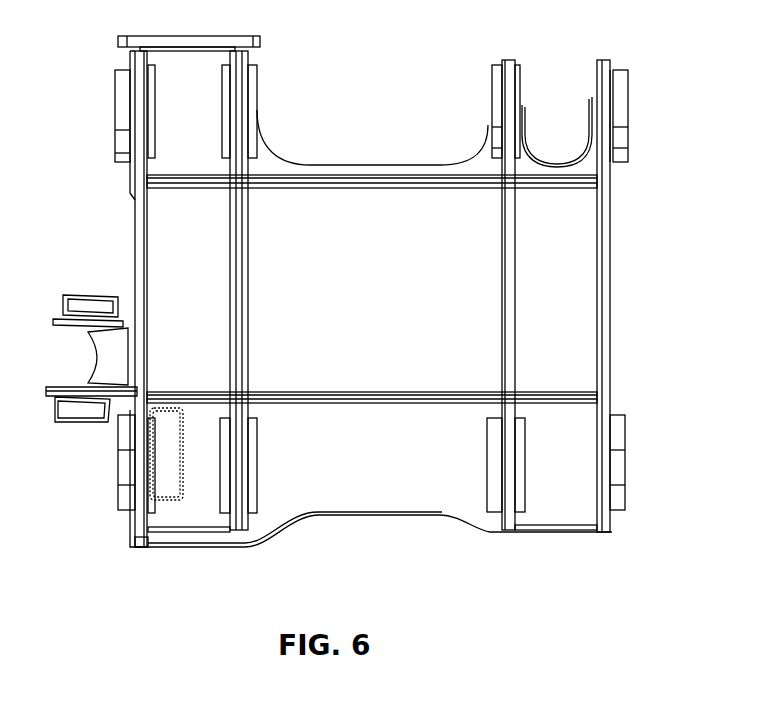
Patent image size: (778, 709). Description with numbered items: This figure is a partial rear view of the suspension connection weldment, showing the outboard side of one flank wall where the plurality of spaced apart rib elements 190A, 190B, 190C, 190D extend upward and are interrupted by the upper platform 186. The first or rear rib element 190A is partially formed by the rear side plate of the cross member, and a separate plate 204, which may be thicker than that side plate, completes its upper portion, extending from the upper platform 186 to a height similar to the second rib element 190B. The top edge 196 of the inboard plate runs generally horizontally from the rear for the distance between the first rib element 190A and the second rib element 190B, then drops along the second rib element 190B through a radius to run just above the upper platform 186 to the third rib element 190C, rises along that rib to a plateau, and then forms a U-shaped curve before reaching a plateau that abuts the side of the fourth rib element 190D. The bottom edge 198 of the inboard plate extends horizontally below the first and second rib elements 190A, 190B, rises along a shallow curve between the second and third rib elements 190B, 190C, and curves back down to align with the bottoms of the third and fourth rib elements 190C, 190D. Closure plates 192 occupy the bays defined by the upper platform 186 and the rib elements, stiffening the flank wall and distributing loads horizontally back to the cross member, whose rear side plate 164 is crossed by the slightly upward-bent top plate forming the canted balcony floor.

The rear side plate 164 is at (92, 423).
The upper platform 186 is at (345, 185).
The first rib element 190A is at (142, 232).
The second rib element 190B is at (235, 270).
The third rib element 190C is at (512, 262).
The fourth rib element 190D is at (612, 277).
The closure plates 192 is at (300, 392).
The top edge of the inboard plate 196 is at (297, 160).
The bottom edge of the inboard plate 198 is at (325, 518).
The separate plate 204 is at (138, 80).